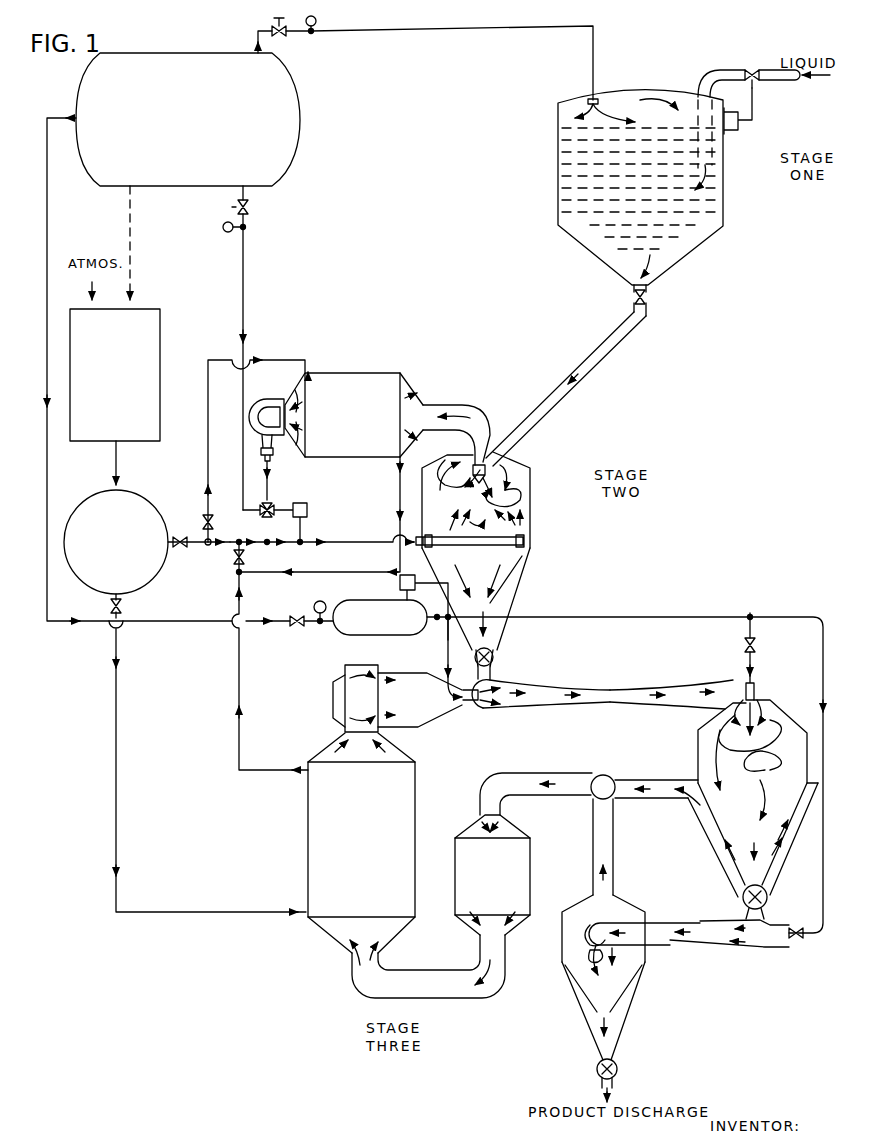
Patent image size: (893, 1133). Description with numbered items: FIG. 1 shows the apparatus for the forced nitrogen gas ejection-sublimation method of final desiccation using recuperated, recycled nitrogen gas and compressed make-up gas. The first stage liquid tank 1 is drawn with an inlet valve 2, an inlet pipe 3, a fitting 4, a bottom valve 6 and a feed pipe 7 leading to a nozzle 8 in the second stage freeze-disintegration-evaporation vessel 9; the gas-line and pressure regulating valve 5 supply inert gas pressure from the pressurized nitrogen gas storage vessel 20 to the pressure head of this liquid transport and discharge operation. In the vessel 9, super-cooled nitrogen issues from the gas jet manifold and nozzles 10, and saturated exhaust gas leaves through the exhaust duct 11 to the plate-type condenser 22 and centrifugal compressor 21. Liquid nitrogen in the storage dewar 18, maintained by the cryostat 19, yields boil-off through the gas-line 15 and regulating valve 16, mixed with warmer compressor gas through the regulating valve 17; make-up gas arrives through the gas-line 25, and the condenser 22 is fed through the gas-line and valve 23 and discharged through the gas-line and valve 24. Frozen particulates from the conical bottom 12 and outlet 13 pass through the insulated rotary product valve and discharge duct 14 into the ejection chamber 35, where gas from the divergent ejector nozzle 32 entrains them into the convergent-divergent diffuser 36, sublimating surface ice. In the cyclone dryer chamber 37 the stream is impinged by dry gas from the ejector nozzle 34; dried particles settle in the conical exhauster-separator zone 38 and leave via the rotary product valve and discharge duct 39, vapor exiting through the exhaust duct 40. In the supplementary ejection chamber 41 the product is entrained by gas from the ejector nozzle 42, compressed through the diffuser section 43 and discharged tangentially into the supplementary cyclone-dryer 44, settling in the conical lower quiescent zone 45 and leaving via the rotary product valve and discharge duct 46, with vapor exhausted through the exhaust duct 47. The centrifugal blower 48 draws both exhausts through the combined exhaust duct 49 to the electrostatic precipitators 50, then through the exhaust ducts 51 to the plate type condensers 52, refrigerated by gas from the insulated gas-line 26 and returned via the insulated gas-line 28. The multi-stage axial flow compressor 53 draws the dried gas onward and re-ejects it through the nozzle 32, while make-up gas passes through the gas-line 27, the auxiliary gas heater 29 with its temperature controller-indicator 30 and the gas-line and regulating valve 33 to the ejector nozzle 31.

The liquid supply tank 1 is at (725, 207).
The liquid inlet valve 2 is at (753, 62).
The liquid inlet pipe 3 is at (722, 68).
The level control 4 is at (739, 125).
The gas-line and pressure regulating valve 5 is at (498, 30).
The tank outlet valve 6 is at (648, 296).
The feed pipe 7 is at (567, 385).
The spray nozzle 8 is at (488, 470).
The freeze-disintegration-evaporation vessel 9 is at (532, 483).
The gas jet manifold and nozzles 10 is at (526, 540).
The exhaust duct 11 is at (489, 412).
The conical bottom 12 is at (512, 600).
The chamber outlet 13 is at (496, 628).
The insulated rotary product valve and discharge duct 14 is at (493, 658).
The gas-line 15 is at (350, 546).
The regulating valve 16 is at (186, 558).
The regulating valve 17 is at (270, 505).
The storage dewar 18 is at (145, 504).
The cryostat 19 is at (161, 353).
The pressurized nitrogen gas storage vessel 20 is at (303, 115).
The centrifugal compressor 21 is at (264, 399).
The plate-type condenser 22 is at (372, 373).
The gas-line and valve 23 is at (207, 446).
The gas-line and valve 24 is at (398, 487).
The gas-line 25 is at (243, 467).
The insulated gas-line 26 is at (118, 694).
The gas-line 27 is at (62, 624).
The insulated gas-line 28 is at (238, 640).
The auxiliary gas heater 29 is at (361, 602).
The interlocked temperature controller-indicator 30 is at (399, 584).
The gas-line and divergent ejector nozzle 31 is at (447, 652).
The divergent ejector nozzle 32 is at (464, 708).
The gas-line and regulating valve 33 is at (448, 628).
The divergent ejector nozzle 34 is at (757, 696).
The ejection chamber 35 is at (530, 685).
The convergent-divergent diffuser 36 is at (616, 693).
The cyclone dryer chamber 37 is at (697, 735).
The conical exhauster-separator zone 38 is at (733, 865).
The rotary product valve and discharge duct 39 is at (742, 895).
The exhaust duct 40 is at (650, 783).
The supplementary ejection chamber 41 is at (738, 949).
The divergent ejector nozzle 42 is at (770, 948).
The convergent-divergent diffuser section 43 is at (680, 946).
The supplementary cyclone-dryer 44 is at (625, 907).
The conical lower quiescent zone 45 is at (620, 1013).
The rotary product valve and discharge duct 46 is at (618, 1069).
The exhaust duct 47 is at (615, 849).
The centrifugal blower 48 is at (600, 774).
The combined exhaust duct 49 is at (515, 774).
The electrostatic precipitators 50 is at (530, 862).
The exhaust ducts 51 is at (415, 978).
The plate type condensers 52 is at (404, 806).
The multi-stage axial flow compressor 53 is at (420, 720).